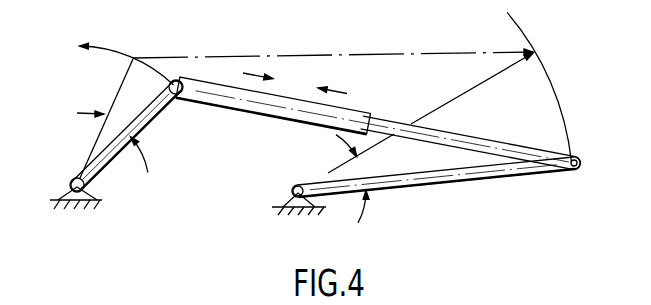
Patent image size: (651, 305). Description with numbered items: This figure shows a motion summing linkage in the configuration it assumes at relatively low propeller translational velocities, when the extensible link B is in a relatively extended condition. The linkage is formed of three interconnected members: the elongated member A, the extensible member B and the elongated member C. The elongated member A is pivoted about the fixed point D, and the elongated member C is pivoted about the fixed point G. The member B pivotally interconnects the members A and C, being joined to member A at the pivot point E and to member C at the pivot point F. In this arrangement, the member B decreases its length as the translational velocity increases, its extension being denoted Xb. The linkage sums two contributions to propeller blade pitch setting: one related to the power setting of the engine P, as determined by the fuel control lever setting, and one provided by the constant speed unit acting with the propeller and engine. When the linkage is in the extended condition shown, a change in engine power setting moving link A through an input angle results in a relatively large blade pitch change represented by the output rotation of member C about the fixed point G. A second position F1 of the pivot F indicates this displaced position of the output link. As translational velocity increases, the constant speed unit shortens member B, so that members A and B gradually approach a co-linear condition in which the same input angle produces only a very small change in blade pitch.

The elongated member A is at (149, 121).
The extensible member B is at (250, 112).
The elongated member C is at (460, 180).
The fixed pivot point D is at (72, 181).
The pivot point E is at (181, 79).
The pivot point F is at (578, 162).
The fixed pivot point G is at (292, 190).
The engine P is at (124, 53).
The alternate position F1 of joint F F1 is at (353, 92).
The extension Xb is at (295, 89).